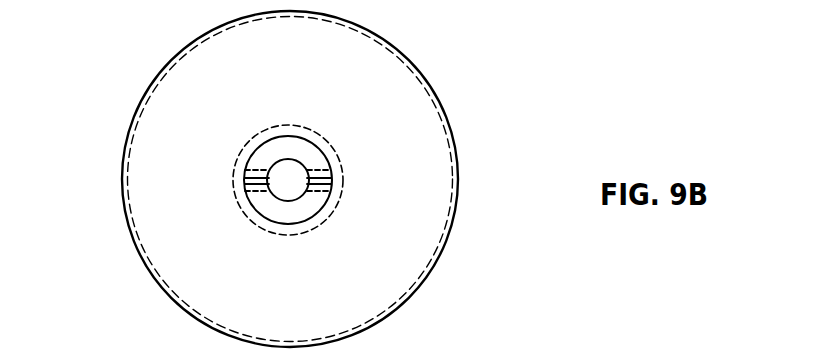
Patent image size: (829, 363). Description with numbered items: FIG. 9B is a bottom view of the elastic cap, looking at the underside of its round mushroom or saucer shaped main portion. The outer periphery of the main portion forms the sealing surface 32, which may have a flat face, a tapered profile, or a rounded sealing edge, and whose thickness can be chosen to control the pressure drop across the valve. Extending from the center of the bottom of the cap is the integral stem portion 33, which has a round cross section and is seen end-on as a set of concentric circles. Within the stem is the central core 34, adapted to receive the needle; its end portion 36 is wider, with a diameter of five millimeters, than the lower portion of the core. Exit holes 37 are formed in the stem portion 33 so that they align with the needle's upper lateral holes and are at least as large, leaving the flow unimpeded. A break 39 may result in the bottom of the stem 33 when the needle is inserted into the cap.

The sealing surface 32 is at (443, 110).
The stem portion 33 is at (263, 152).
The central core 34 is at (282, 187).
The end portion of central core 36 is at (312, 131).
The exit holes 37 is at (327, 185).
The break 39 is at (245, 181).